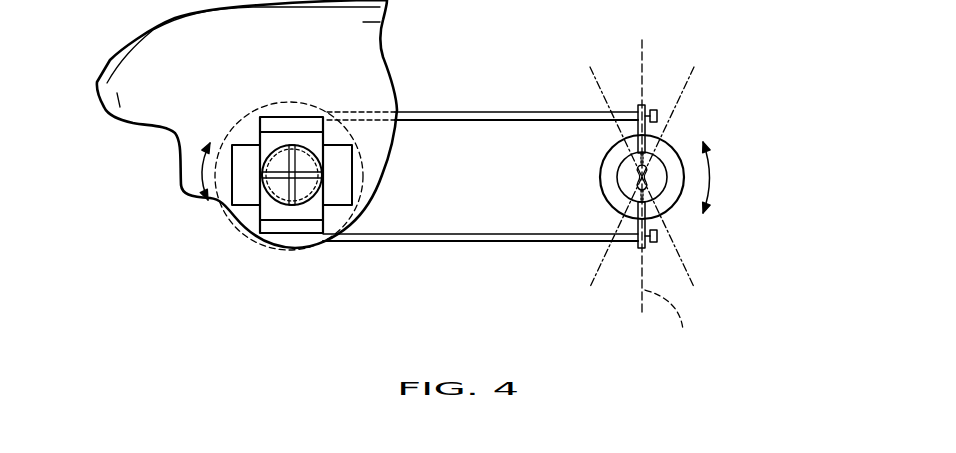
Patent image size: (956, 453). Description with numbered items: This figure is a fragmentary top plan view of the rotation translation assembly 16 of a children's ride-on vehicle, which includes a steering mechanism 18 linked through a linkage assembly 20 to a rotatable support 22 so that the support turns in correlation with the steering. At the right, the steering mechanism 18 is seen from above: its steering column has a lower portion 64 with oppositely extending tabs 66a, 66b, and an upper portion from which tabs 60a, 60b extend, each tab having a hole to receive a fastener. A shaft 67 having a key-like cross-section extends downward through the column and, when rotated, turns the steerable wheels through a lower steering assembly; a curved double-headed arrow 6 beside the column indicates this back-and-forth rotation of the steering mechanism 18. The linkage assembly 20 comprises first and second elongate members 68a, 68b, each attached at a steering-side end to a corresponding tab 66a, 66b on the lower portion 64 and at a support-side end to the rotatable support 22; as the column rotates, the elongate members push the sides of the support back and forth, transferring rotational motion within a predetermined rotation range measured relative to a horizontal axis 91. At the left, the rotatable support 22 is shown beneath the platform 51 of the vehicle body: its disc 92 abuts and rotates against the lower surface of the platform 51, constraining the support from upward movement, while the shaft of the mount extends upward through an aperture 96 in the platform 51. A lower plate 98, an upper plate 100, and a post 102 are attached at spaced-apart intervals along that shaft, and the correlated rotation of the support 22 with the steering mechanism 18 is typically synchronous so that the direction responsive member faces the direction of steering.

The platform 51 is at (100, 110).
The disc 92 is at (312, 250).
The upper plate 100 is at (275, 222).
The post 102 is at (267, 198).
The lower plate 98 is at (290, 237).
The aperture 96 is at (215, 207).
The rotatable support 22 is at (353, 252).
The linkage assembly 20 is at (458, 252).
The second elongate member 68b is at (472, 122).
The first elongate member 68a is at (507, 230).
The lower portion 64 is at (607, 157).
The shaft 67 is at (620, 175).
The tab 60b is at (657, 137).
The tab 60a is at (647, 210).
The tab 66b is at (640, 95).
The tab 66a is at (638, 250).
The tilt direction 6 is at (667, 150).
The steering mechanism 18 is at (690, 178).
The horizontal axis 91 is at (671, 246).
The rotation translation assembly 16 is at (572, 340).